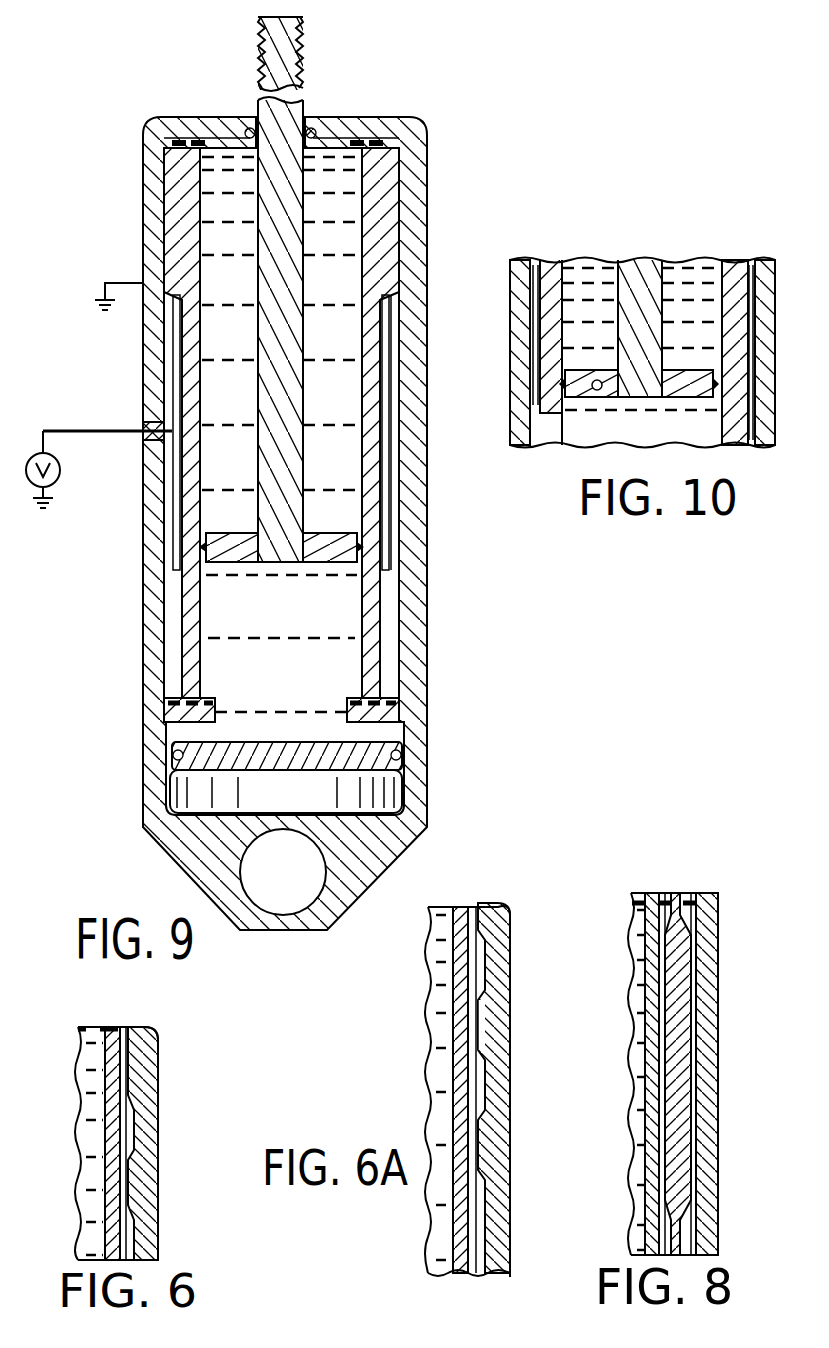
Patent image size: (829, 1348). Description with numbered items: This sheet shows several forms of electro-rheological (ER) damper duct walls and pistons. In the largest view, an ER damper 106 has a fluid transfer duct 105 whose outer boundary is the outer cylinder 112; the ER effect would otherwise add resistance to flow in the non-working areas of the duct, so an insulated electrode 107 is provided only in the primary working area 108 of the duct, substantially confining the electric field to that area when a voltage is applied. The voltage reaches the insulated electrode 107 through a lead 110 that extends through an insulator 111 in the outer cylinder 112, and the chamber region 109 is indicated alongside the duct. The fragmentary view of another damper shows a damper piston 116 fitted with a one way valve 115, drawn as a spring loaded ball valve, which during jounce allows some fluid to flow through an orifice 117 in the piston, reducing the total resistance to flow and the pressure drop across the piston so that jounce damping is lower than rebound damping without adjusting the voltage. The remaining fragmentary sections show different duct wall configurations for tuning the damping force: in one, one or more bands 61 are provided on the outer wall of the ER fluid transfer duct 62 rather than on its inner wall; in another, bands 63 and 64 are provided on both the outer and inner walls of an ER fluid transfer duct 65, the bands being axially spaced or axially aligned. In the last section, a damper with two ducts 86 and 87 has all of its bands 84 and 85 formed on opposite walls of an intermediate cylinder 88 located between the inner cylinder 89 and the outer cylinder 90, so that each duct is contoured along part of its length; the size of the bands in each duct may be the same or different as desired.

In FIG. 9, the fluid transfer duct 105 is at (388, 200).
In FIG. 9, the ER damper 106 is at (130, 140).
In FIG. 9, the insulated electrode 107 is at (390, 516).
In FIG. 9, the primary working area 108 is at (391, 474).
In FIG. 9, the fluid chamber 109 is at (386, 275).
In FIG. 9, the lead 110 is at (111, 426).
In FIG. 9, the insulator 111 is at (153, 446).
In FIG. 9, the outer cylinder 112 is at (150, 552).
In FIG. 10, the one way valve 115 is at (577, 398).
In FIG. 10, the damper piston 116 is at (717, 350).
In FIG. 10, the orifice 117 is at (598, 398).
In FIG. 6, the bands 61 is at (118, 1078).
In FIG. 6, the ER fluid transfer duct 62 is at (131, 1125).
In FIG. 6A, the bands 63 is at (483, 1082).
In FIG. 6A, the bands 64 is at (467, 973).
In FIG. 6A, the ER fluid transfer duct 65 is at (479, 1032).
In FIG. 8, the bands 84 is at (666, 1069).
In FIG. 8, the bands 85 is at (692, 1058).
In FIG. 8, the duct 86 is at (660, 912).
In FIG. 8, the duct 87 is at (690, 912).
In FIG. 8, the intermediate cylinder 88 is at (678, 1001).
In FIG. 8, the inner cylinder 89 is at (649, 1137).
In FIG. 8, the outer cylinder 90 is at (712, 1130).